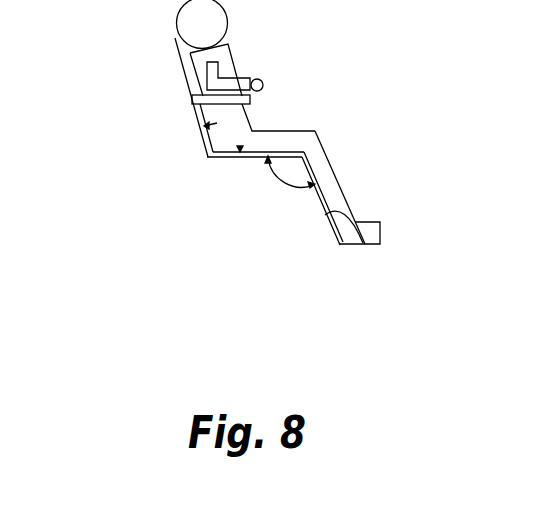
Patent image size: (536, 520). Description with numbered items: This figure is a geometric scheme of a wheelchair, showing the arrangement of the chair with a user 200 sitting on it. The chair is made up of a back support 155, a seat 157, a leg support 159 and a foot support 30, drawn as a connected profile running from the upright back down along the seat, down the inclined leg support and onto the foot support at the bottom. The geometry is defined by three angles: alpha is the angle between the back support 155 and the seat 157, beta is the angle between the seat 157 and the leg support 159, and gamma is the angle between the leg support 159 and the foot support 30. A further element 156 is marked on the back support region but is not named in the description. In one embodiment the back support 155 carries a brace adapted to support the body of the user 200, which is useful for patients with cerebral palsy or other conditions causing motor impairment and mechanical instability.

The back support 155 is at (196, 99).
The seat back frame 156 is at (193, 104).
The seat 157 is at (250, 160).
The leg support 159 is at (318, 199).
The foot support 30 is at (355, 247).
The user 200 is at (247, 115).